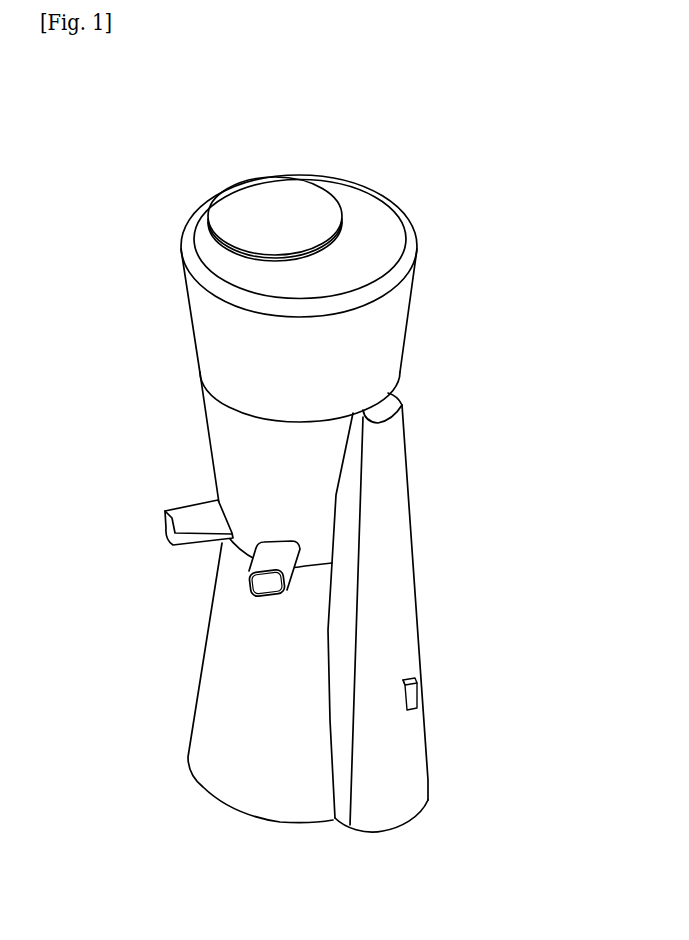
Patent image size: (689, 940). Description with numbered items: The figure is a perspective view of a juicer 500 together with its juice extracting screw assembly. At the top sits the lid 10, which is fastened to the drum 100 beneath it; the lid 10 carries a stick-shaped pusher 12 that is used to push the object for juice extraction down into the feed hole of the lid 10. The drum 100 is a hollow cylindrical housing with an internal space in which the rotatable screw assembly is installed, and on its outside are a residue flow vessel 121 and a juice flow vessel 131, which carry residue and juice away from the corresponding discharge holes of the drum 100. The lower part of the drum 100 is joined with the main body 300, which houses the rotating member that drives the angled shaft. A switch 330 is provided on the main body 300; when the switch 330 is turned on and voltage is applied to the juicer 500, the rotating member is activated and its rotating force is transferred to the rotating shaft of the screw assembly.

The juicer 500 is at (98, 82).
The lid 10 is at (388, 227).
The pusher 12 is at (282, 194).
The drum 100 is at (220, 432).
The residue flow vessel 121 is at (192, 510).
The juice flow vessel 131 is at (267, 563).
The main body 300 is at (215, 672).
The switch 330 is at (410, 693).